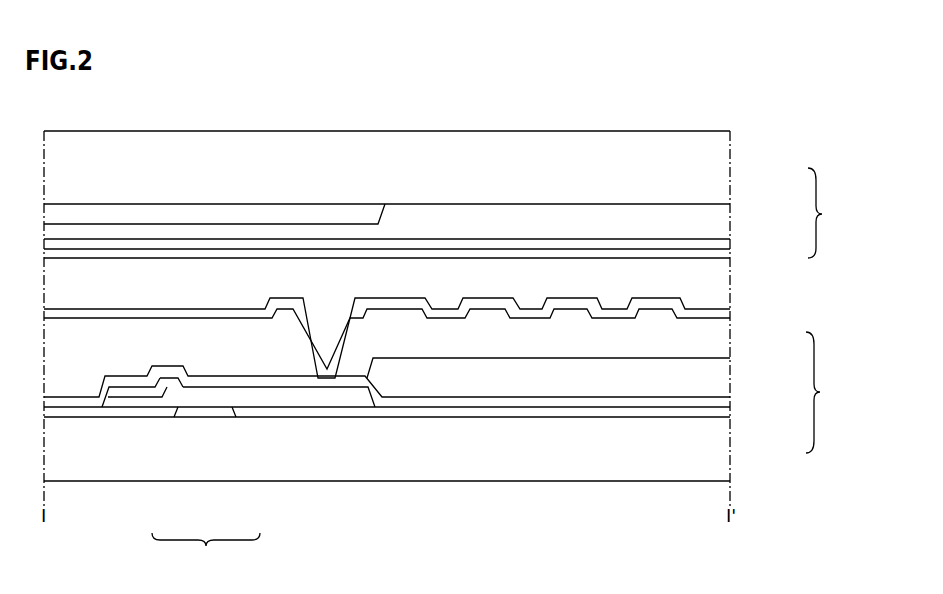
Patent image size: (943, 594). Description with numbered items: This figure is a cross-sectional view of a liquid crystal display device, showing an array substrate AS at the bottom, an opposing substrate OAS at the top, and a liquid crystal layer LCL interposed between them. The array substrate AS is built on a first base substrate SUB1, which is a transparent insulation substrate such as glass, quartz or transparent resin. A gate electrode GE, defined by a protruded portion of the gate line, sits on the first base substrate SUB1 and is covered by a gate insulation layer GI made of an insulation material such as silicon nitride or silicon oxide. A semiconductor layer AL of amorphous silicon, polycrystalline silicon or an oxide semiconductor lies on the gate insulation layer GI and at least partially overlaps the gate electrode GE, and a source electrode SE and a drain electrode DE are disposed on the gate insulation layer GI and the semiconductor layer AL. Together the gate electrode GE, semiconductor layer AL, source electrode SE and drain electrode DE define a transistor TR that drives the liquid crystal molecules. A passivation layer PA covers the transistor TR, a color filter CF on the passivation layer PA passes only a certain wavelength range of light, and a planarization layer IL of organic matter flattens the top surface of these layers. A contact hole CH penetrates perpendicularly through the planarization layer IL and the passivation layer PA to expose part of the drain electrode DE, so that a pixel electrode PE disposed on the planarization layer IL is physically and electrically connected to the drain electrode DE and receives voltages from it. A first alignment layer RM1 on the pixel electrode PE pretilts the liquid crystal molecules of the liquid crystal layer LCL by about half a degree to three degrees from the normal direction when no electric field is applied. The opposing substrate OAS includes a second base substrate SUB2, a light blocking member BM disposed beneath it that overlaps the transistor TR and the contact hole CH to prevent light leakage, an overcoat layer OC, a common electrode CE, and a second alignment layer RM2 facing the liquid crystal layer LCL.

The second base substrate SUB2 is at (722, 170).
The light blocking member BM is at (365, 210).
The overcoat layer OC is at (722, 218).
The common electrode CE is at (727, 246).
The second alignment layer RM2 is at (722, 258).
The liquid crystal layer LCL is at (722, 282).
The opposing substrate OAS is at (836, 213).
The first alignment layer RM1 is at (722, 314).
The pixel electrode PE is at (662, 318).
The contact hole CH is at (333, 320).
The planarization layer IL is at (723, 351).
The color filter CF is at (722, 388).
The passivation layer PA is at (728, 403).
The gate insulation layer GI is at (725, 415).
The first base substrate SUB1 is at (722, 450).
The array substrate AS is at (828, 392).
The source electrode SE is at (137, 393).
The semiconductor layer AL is at (192, 392).
The gate electrode GE is at (226, 410).
The drain electrode DE is at (298, 395).
The transistor TR is at (206, 553).